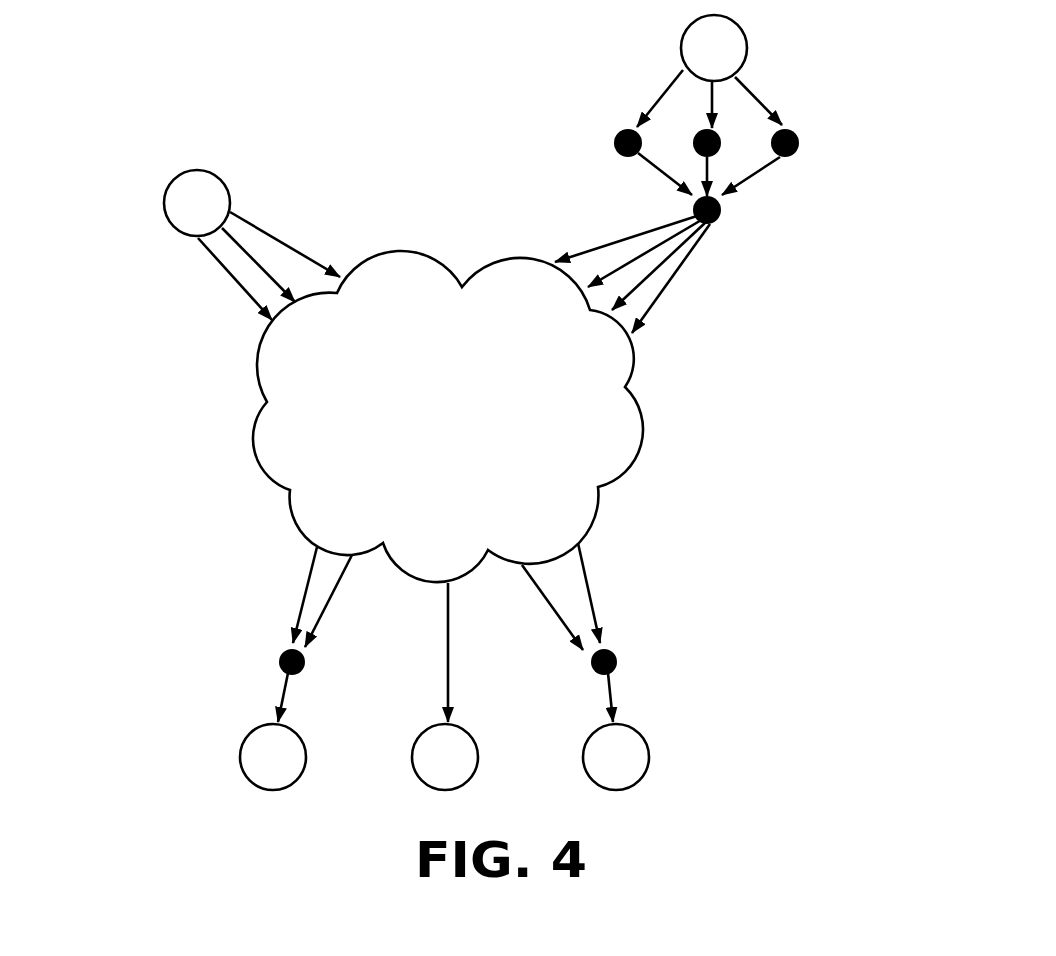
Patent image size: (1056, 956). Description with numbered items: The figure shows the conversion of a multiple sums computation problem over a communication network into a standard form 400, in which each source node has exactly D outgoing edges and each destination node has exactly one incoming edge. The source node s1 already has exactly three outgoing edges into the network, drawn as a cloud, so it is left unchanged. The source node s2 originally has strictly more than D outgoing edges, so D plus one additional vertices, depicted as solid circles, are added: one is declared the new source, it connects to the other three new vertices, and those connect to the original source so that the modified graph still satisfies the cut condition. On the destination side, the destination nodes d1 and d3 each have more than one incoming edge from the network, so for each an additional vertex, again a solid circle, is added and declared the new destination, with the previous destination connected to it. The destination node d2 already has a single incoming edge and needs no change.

The standard form 400 is at (926, 67).
The source node s1 is at (252, 245).
The source node s2 is at (709, 71).
The destination node d1 is at (296, 668).
The destination node d2 is at (445, 686).
The destination node d3 is at (585, 666).